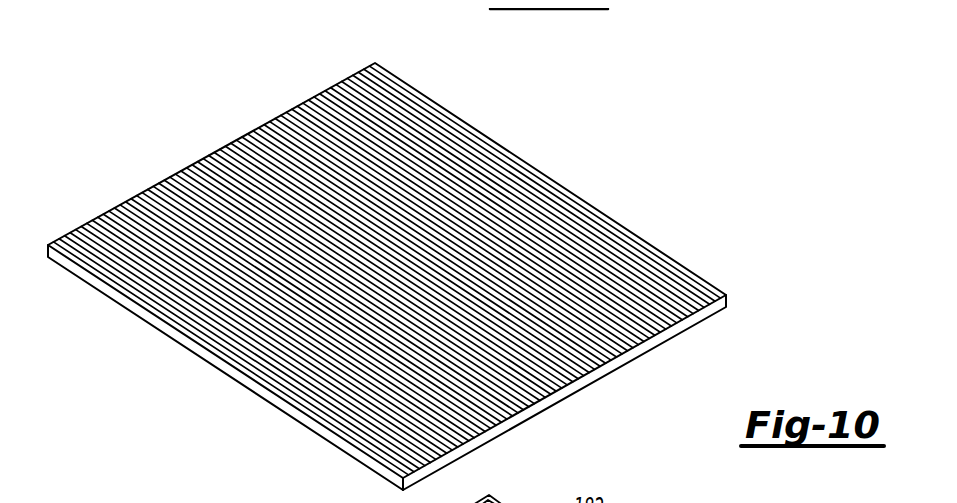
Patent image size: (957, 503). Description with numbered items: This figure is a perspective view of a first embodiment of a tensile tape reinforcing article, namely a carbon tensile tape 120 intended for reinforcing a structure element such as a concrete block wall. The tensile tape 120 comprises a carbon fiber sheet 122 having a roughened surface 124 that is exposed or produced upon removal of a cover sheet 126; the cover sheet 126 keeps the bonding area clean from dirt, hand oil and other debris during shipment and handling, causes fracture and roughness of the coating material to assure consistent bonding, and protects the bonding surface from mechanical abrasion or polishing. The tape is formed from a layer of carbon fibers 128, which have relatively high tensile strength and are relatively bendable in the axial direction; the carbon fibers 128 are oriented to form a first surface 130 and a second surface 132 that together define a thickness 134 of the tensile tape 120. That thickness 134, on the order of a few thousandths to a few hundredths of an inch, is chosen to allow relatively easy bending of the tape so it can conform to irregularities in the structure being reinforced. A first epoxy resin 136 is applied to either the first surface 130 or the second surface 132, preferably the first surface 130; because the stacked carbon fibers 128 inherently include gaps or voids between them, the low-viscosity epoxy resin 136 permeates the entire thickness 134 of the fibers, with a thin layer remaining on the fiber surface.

The tensile tape 120 is at (426, 256).
The carbon fiber sheet 122 is at (552, 174).
The roughened surface 124 is at (614, 359).
The cover sheet 126 is at (552, 394).
The carbon fibers 128 is at (697, 282).
The first surface 130 is at (247, 183).
The second surface 132 is at (270, 400).
The thickness 134 is at (722, 290).
The first epoxy resin 136 is at (563, 238).